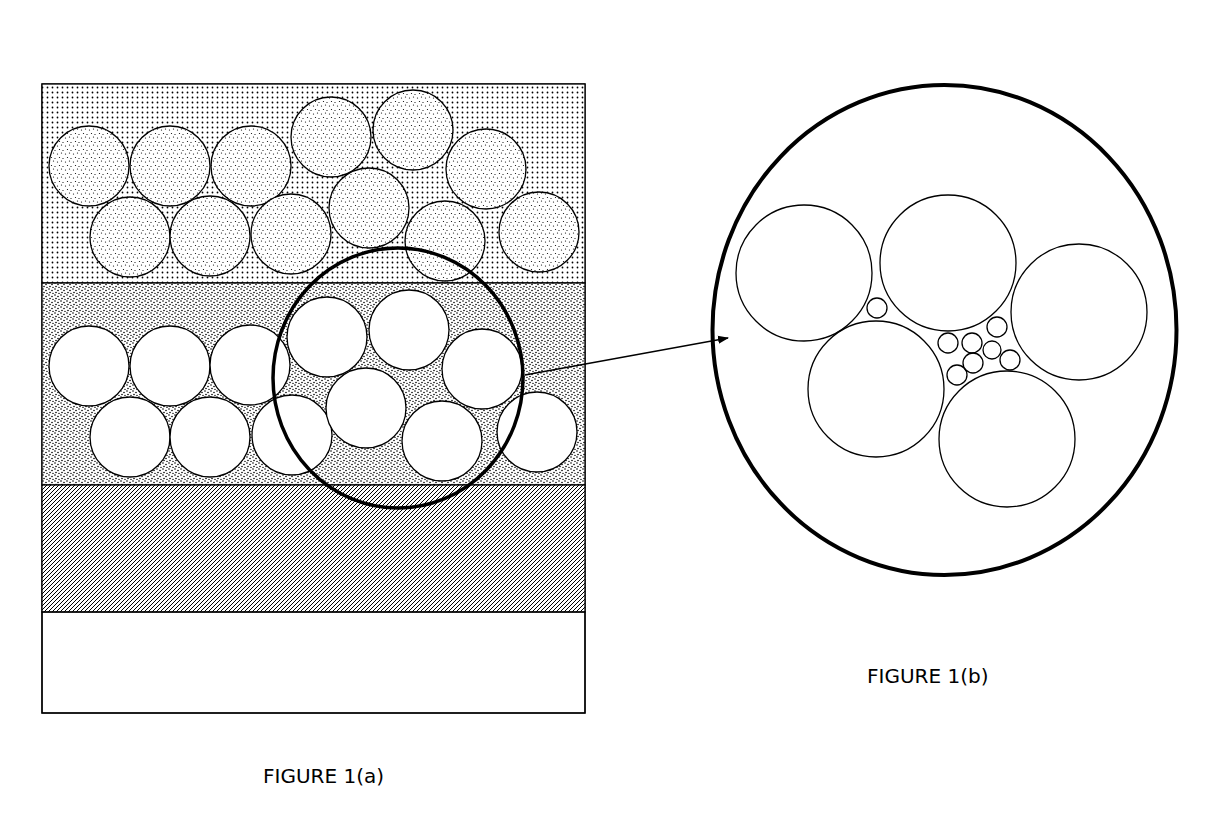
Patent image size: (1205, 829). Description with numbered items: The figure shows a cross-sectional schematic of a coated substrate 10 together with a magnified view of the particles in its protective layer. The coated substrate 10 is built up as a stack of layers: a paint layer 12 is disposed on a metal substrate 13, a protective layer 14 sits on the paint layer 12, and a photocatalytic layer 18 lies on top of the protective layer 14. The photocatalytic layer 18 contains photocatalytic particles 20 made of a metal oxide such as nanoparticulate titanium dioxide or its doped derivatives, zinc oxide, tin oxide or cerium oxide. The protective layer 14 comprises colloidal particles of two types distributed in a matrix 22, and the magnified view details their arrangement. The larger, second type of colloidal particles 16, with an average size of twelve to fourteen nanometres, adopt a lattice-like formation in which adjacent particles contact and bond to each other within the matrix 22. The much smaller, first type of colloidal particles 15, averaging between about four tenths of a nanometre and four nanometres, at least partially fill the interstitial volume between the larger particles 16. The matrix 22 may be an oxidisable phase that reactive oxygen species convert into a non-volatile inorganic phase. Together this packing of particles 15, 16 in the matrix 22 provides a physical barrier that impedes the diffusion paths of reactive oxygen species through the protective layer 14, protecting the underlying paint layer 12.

In FIG. 1A, the coated substrate 10 is at (598, 175).
In FIG. 1A, the paint layer 12 is at (578, 568).
In FIG. 1A, the metal substrate 13 is at (563, 682).
In FIG. 1A, the protective layer 14 is at (570, 322).
In FIG. 1B, the first type of colloidal particles 15 is at (1013, 358).
In FIG. 1A, the second type of colloidal particles 16 is at (542, 447).
In FIG. 1B, the second type of colloidal particles 16 is at (1092, 263).
In FIG. 1A, the photocatalytic layer 18 is at (570, 110).
In FIG. 1A, the photocatalytic particles 20 is at (295, 118).
In FIG. 1A, the matrix 22 is at (563, 387).